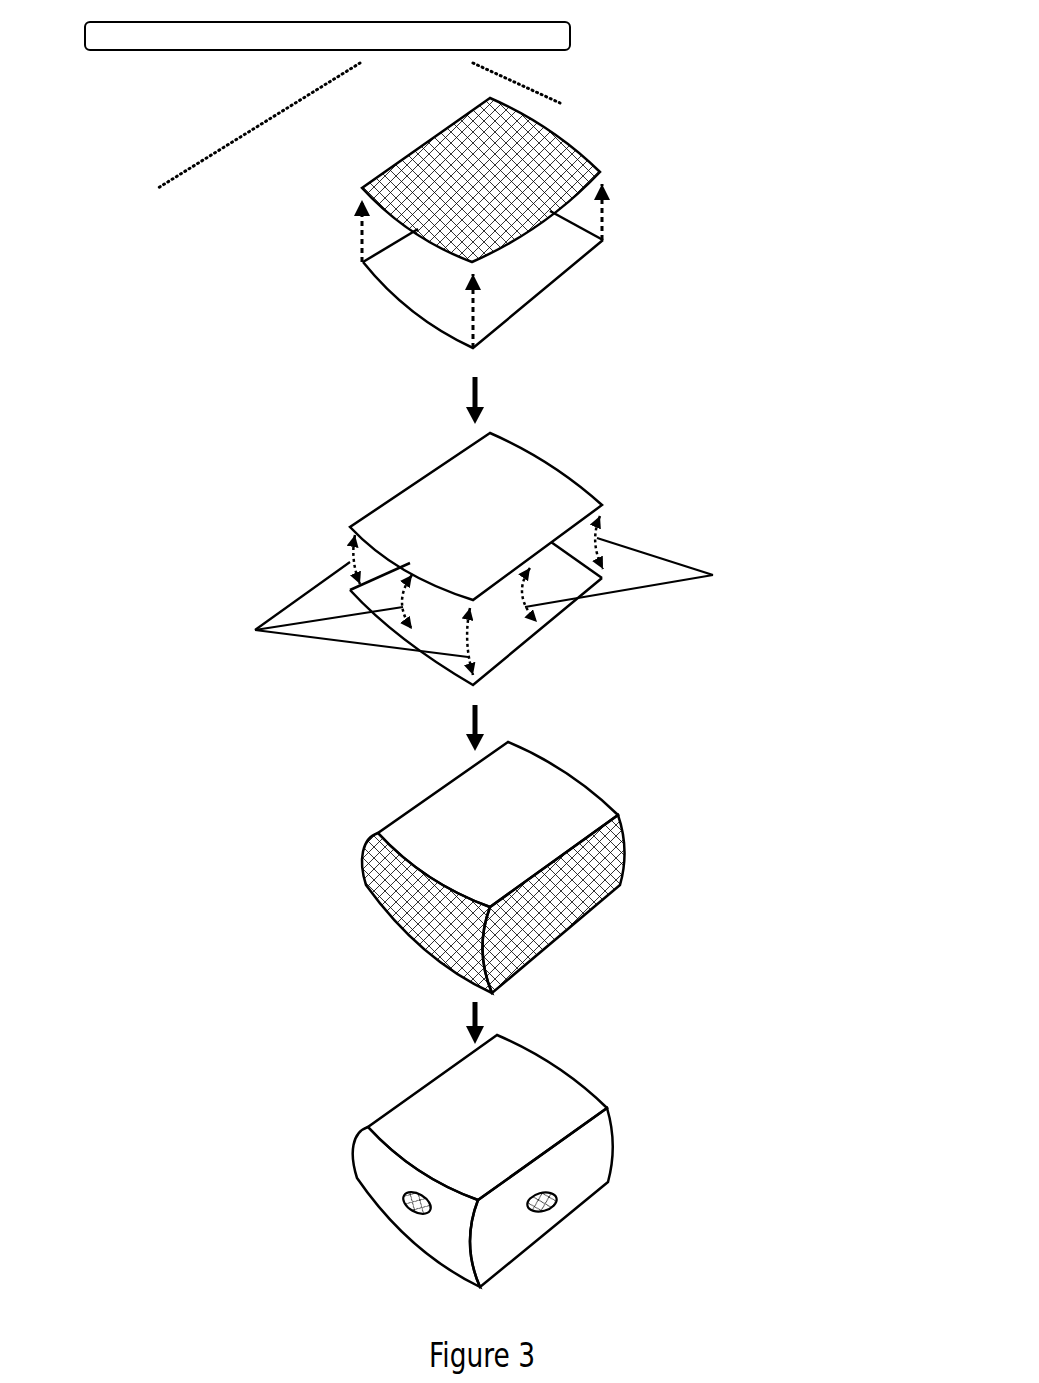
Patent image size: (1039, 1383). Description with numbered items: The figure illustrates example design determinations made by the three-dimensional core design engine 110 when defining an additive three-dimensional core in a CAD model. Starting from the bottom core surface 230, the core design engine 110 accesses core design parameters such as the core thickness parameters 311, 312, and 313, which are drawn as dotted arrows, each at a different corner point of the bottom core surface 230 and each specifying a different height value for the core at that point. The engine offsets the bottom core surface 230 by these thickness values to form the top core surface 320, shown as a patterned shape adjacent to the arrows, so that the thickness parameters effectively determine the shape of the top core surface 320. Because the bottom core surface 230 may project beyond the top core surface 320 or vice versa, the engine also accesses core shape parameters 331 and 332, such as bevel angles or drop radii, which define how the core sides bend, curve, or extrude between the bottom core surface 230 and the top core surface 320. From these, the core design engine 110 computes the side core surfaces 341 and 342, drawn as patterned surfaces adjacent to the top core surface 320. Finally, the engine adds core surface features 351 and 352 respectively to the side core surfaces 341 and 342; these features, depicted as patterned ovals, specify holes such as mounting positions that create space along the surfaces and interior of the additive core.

The 3D core design engine 110 is at (559, 45).
The top core surface 320 is at (556, 150).
The bottom core surface 230 is at (421, 318).
The core thickness parameter 311 is at (237, 231).
The core thickness parameter 312 is at (599, 321).
The core thickness parameter 313 is at (732, 212).
The core shape parameter 331 is at (249, 605).
The core shape parameter 332 is at (731, 569).
The side core surface 341 is at (405, 887).
The side core surface 342 is at (588, 867).
The core surface feature 351 is at (408, 1203).
The core surface feature 352 is at (557, 1203).